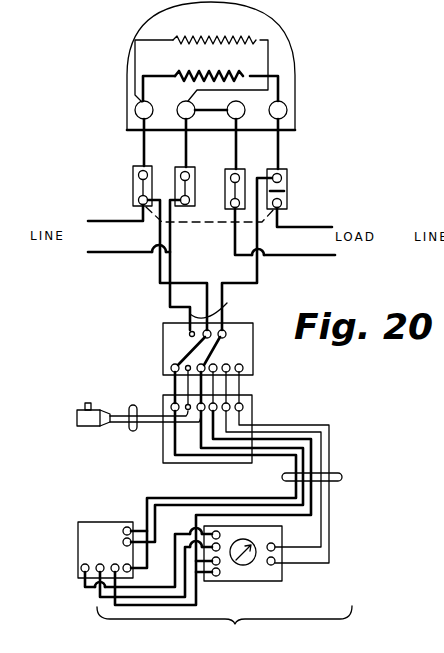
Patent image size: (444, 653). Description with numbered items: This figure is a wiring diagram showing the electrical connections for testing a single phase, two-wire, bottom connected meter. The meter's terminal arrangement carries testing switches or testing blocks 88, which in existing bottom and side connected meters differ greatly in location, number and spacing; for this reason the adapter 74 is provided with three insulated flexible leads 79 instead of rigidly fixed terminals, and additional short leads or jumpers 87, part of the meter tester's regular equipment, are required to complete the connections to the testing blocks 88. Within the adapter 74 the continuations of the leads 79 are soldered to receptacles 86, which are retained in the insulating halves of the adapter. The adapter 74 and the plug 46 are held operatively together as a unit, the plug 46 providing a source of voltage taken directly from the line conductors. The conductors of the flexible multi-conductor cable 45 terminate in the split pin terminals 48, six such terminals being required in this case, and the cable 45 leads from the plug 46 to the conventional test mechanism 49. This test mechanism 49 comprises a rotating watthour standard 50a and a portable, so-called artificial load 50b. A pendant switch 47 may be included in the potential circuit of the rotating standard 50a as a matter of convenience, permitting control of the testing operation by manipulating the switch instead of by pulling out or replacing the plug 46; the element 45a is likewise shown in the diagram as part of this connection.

The testing blocks 88 is at (283, 181).
The jumpers 87 is at (213, 224).
The insulated flexible leads 79 is at (235, 302).
The adapter 74 is at (163, 343).
The receptacles 86 is at (171, 368).
The split pin terminals 48 is at (165, 386).
The pendant switch 47 is at (97, 428).
The fuse 45a is at (134, 431).
The plug 46 is at (162, 451).
The flexible multi-conductor cable 45 is at (342, 477).
The artificial load 50b is at (104, 537).
The rotating watthour standard 50a is at (263, 580).
The test mechanism 49 is at (224, 625).